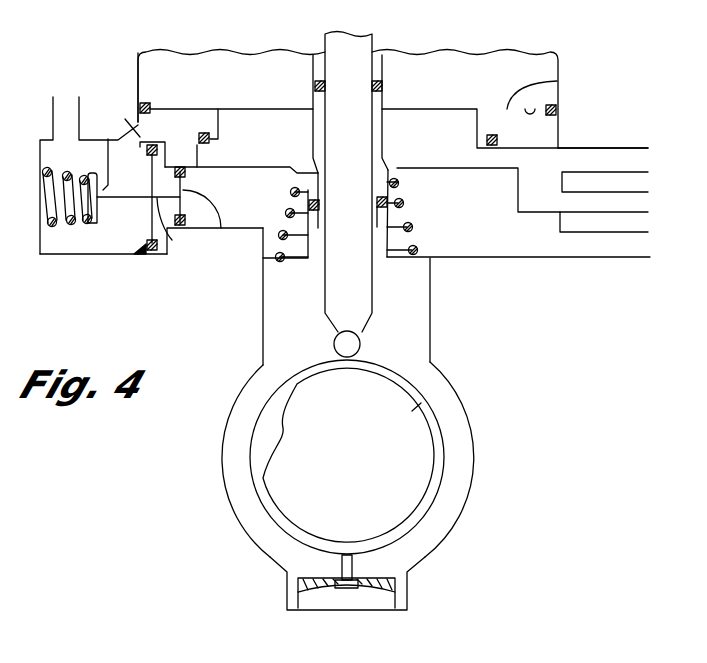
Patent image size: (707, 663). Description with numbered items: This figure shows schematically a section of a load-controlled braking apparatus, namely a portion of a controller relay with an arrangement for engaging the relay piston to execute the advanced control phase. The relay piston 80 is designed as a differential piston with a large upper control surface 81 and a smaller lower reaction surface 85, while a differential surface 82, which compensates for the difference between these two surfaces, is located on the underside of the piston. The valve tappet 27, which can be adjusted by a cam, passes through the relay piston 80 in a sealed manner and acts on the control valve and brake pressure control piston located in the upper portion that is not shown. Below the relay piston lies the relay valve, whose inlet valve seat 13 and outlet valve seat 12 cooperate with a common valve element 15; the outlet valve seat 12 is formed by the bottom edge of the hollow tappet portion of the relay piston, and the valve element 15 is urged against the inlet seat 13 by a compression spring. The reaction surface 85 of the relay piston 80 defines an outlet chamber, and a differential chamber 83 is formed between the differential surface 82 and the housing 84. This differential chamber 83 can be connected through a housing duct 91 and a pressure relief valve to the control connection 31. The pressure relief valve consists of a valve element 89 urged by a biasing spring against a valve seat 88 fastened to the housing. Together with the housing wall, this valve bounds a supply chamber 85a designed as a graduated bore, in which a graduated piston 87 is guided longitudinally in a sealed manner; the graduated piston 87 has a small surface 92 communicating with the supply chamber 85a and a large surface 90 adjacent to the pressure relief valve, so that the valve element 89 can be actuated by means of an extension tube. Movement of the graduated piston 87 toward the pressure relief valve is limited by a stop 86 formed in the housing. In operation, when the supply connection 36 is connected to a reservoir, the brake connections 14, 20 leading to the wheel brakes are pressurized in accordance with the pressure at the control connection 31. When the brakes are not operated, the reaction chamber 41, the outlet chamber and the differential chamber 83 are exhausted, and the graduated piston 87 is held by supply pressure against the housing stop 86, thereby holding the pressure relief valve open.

The outlet valve seat 12 is at (310, 166).
The inlet valve seat 13 is at (385, 167).
The brake connection 14 is at (640, 160).
The valve element 15 is at (377, 213).
The brake connection 20 is at (640, 200).
The valve tappet 27 is at (335, 307).
The control connection 31 is at (64, 110).
The supply connection 36 is at (640, 242).
The reaction chamber 41 is at (480, 77).
The relay piston 80 is at (437, 107).
The control surface 81 is at (558, 84).
The differential surface 82 is at (541, 108).
The differential chamber 83 is at (546, 128).
The housing 84 is at (560, 138).
The reaction surface 85 is at (369, 189).
The supply chamber 85a is at (493, 240).
The stop 86 is at (141, 255).
The graduated piston 87 is at (181, 228).
The valve seat 88 is at (106, 212).
The valve element 89 is at (97, 215).
The large surface 90 is at (151, 170).
The housing duct 91 is at (131, 130).
The small surface 92 is at (215, 223).